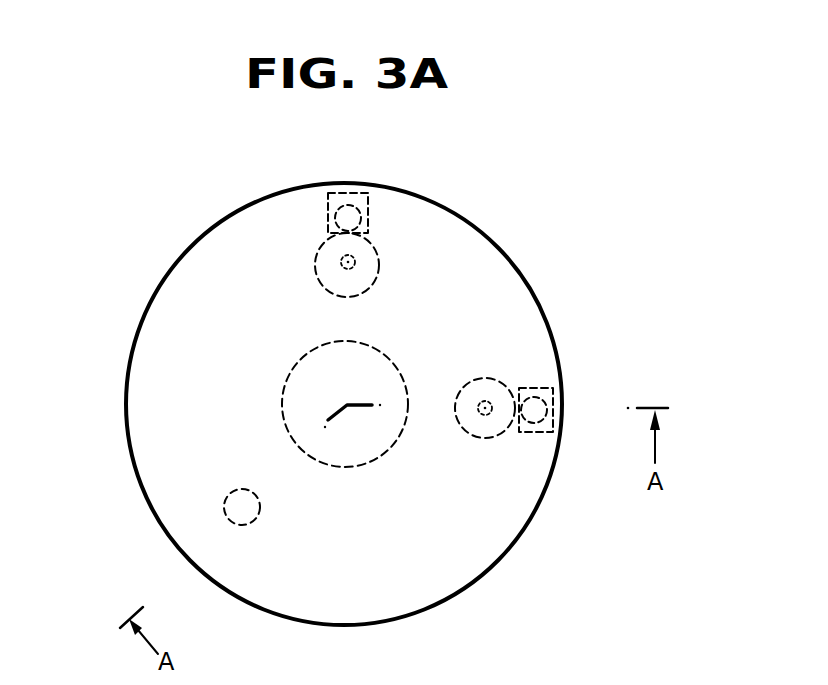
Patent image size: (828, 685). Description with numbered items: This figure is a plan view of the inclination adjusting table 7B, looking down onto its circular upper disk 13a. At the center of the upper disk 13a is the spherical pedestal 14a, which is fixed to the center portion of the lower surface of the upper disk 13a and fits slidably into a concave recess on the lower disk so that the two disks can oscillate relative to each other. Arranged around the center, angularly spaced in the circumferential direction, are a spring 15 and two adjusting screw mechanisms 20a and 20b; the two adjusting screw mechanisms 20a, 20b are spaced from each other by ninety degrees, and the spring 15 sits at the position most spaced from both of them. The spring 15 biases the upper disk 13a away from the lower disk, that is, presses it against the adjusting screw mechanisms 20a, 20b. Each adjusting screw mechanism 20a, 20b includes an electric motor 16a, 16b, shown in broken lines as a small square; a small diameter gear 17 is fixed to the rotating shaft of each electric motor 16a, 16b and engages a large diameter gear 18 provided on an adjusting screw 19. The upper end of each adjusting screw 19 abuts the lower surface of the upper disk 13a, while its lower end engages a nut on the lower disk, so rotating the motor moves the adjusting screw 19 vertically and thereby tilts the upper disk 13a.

The inclination adjusting table 7B is at (576, 163).
The upper disk 13a is at (502, 537).
The spherical pedestal 14a is at (283, 387).
The spring 15 is at (223, 507).
The electric motor 16a is at (557, 382).
The electric motor 16b is at (367, 193).
The small diameter gear 17 is at (352, 220).
The large diameter gear 18 is at (323, 247).
The adjusting screw 19 is at (342, 265).
The adjusting screw mechanism 20a is at (615, 388).
The adjusting screw mechanism 20b is at (386, 150).